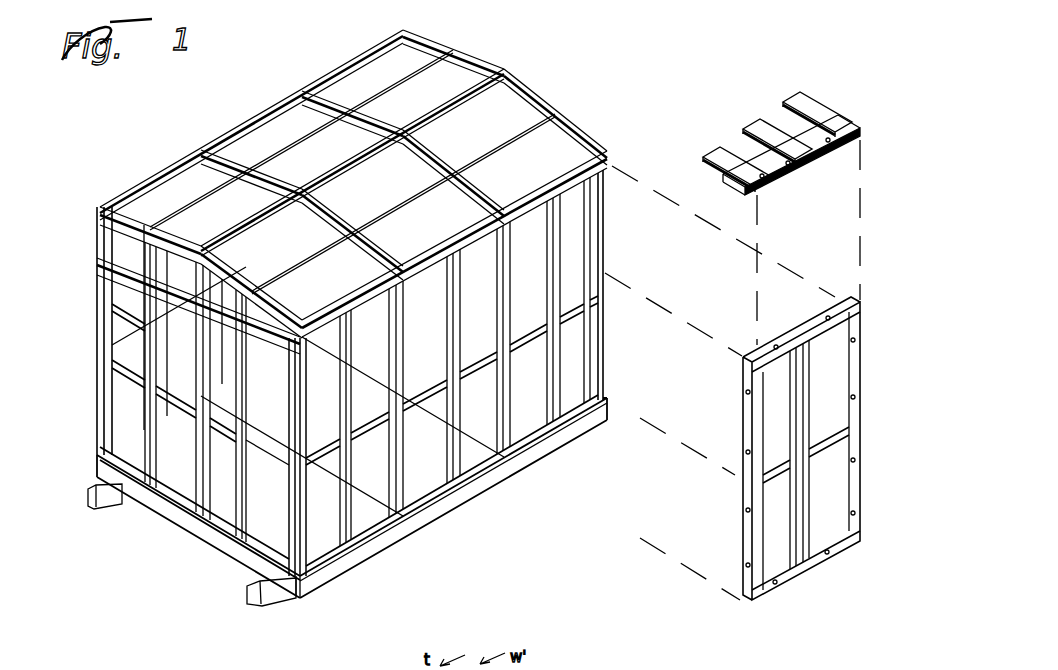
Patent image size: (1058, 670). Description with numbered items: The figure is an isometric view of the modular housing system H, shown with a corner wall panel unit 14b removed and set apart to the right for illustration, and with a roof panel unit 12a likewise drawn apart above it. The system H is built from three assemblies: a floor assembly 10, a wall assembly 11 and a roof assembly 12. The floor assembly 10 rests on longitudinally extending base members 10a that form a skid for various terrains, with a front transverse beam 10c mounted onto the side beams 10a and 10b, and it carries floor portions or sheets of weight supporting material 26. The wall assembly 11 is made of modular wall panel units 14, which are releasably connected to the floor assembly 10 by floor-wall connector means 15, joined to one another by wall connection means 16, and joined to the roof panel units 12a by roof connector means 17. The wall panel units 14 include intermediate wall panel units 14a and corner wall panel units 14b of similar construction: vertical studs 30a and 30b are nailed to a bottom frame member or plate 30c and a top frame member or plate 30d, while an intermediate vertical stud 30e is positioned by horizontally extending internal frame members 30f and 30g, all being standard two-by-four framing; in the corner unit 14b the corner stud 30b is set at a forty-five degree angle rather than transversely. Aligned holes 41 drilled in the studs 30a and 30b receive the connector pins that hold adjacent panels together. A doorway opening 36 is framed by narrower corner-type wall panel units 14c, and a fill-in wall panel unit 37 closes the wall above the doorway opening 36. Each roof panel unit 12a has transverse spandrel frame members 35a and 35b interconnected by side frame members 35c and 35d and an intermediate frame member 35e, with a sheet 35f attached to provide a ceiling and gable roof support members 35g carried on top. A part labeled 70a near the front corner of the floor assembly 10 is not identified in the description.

The modular housing system H is at (268, 108).
The roof connector means 17 is at (92, 210).
The gable roof support members 35g is at (460, 60).
The sheet 35f is at (500, 135).
The roof assembly 12 is at (530, 100).
The top frame member or plate 30d is at (423, 272).
The roof panel unit 12a is at (187, 167).
The wall assembly 11 is at (95, 300).
The floor portions or sheets of weight supporting material 26 is at (267, 427).
The doorway opening 36 is at (232, 491).
The wall panel unit 14c is at (232, 545).
The front transverse beam 10c is at (150, 508).
The intermediate vertically extending stud 30e is at (342, 347).
The horizontally extending internal frame member 30g is at (388, 425).
The side frame member or stud 30b is at (408, 420).
The modular wall panel unit 14 is at (453, 460).
The vertically extending frame member or stud 30a is at (499, 410).
The horizontally extending internal frame member 30f is at (333, 452).
The intermediate wall panel unit 14a is at (492, 465).
The bottom frame member or plate 30c is at (471, 470).
The wall connection means 16 is at (414, 518).
The floor-wall connector means 15 is at (395, 531).
The floor assembly 10 is at (553, 443).
The base corner 70a is at (300, 598).
The wall panel unit 37 is at (180, 312).
The longitudinally extending side beam 10b is at (102, 512).
The longitudinally extending base member 10a is at (288, 602).
The side frame member 35d is at (793, 175).
The side frame member 35c is at (835, 153).
The spandrel frame member 35a is at (710, 165).
The intermediate frame member 35e is at (753, 120).
The spandrel frame member 35b is at (793, 93).
The corner wall panel unit 14b is at (847, 367).
The aligned openings or holes 41 is at (830, 118).